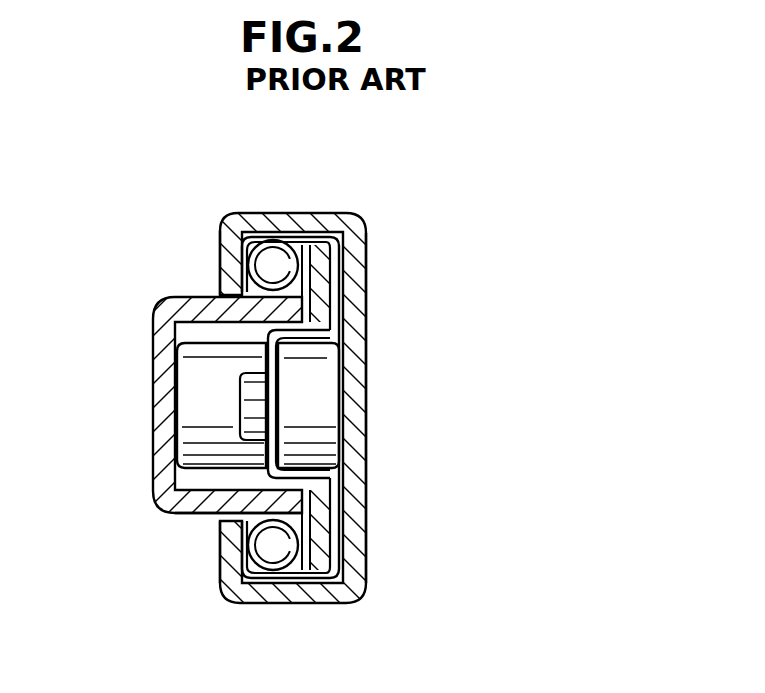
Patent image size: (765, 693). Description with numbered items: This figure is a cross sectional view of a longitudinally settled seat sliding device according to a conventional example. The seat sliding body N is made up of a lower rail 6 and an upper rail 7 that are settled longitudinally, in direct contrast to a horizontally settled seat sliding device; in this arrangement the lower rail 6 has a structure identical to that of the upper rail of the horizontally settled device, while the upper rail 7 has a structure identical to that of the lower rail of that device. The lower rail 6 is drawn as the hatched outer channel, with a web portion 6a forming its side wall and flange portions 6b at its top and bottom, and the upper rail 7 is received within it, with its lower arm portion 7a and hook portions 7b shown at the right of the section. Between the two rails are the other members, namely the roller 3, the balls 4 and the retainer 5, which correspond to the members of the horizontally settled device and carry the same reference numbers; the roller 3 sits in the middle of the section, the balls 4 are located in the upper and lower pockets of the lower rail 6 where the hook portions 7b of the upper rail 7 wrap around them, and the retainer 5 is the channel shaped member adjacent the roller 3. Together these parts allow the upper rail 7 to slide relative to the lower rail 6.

The seat sliding body N is at (452, 240).
The roller 3 is at (185, 446).
The balls 4 is at (272, 258).
The retainer 5 is at (360, 350).
The lower rail 6 is at (380, 412).
The web of outer rail 6a is at (360, 317).
The flange of outer rail 6b is at (220, 260).
The upper rail 7 is at (150, 347).
The lower arm of slider 7a is at (173, 513).
The hook portion of slider 7b is at (320, 278).